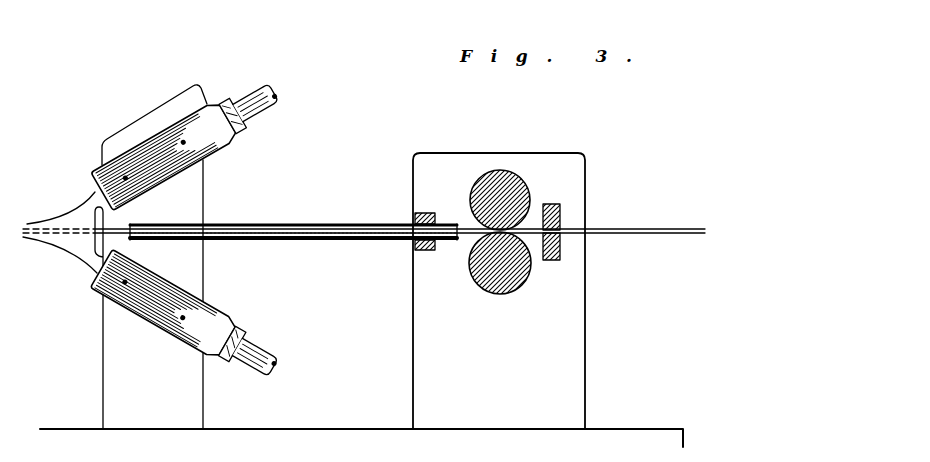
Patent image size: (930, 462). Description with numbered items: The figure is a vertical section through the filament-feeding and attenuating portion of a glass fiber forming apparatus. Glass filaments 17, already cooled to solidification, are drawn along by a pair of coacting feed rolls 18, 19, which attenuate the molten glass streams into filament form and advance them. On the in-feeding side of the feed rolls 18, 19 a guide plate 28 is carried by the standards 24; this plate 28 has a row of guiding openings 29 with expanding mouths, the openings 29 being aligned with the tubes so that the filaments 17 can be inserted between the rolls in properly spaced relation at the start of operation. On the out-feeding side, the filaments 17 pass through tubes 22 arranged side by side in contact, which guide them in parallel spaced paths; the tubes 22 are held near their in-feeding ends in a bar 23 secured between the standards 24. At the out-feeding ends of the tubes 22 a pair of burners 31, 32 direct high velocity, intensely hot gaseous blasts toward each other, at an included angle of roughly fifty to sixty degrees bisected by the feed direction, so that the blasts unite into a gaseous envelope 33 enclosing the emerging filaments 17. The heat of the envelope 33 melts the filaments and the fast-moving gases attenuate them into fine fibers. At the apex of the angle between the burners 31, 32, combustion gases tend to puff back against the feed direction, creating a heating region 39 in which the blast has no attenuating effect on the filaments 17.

The filaments 17 is at (664, 234).
The feed roll 18 is at (497, 176).
The feed roll 19 is at (480, 277).
The tubes 22 is at (250, 232).
The bar 23 is at (416, 216).
The standards 24 is at (415, 288).
The guide plate 28 is at (560, 210).
The guiding openings 29 is at (560, 238).
The burner 31 is at (148, 143).
The burner 32 is at (138, 315).
The gaseous envelope 33 is at (65, 218).
The heating region 39 is at (92, 243).